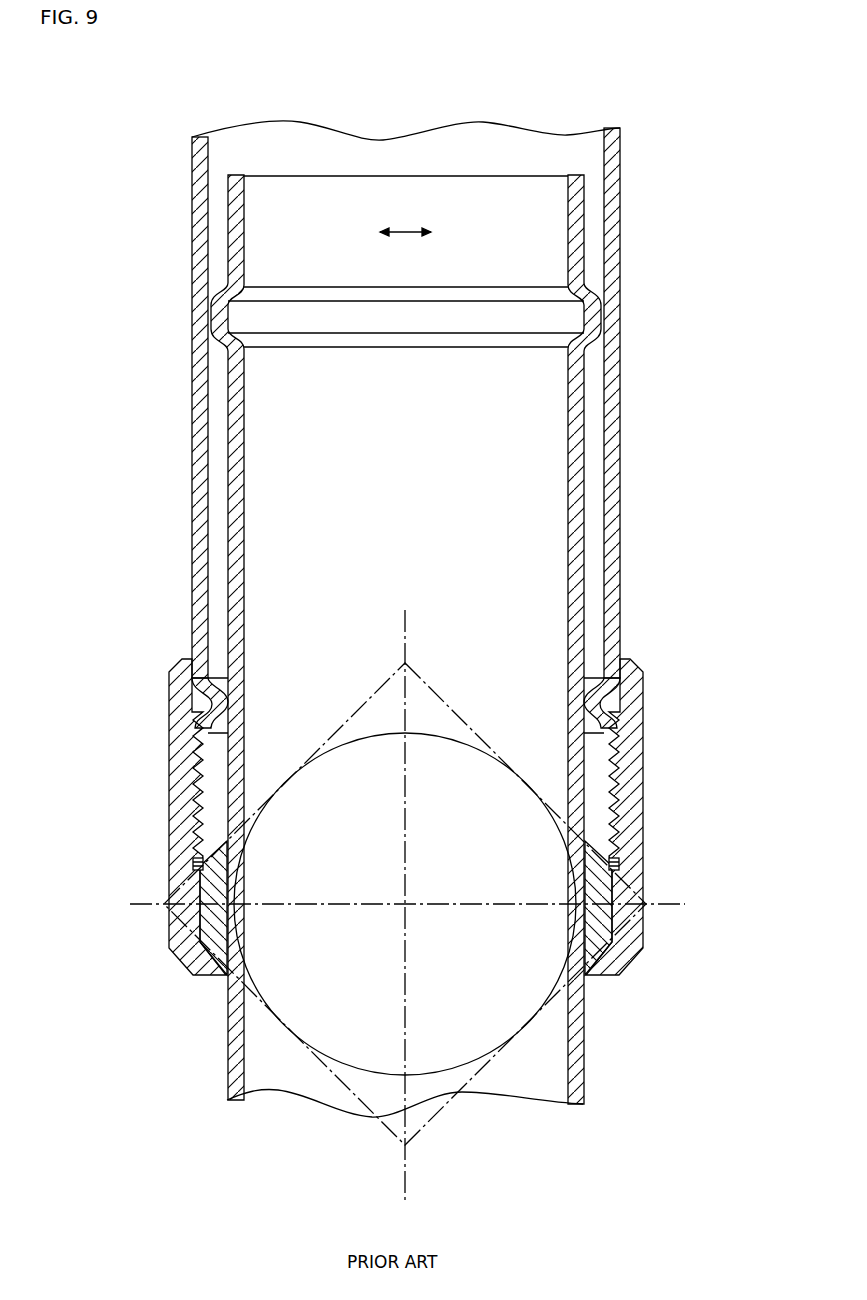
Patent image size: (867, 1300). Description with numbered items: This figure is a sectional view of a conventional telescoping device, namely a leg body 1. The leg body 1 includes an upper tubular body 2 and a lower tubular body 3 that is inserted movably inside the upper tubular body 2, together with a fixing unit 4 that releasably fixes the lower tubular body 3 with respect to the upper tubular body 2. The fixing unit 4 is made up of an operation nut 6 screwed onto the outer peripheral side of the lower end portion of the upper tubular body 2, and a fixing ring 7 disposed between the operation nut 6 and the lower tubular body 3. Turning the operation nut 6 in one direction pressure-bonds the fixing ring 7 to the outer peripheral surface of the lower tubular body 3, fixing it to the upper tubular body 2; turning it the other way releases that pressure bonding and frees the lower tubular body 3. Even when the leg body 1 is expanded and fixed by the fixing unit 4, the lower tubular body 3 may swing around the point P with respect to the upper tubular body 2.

The leg body 1 is at (660, 80).
The upper tubular body 2 is at (630, 176).
The lower tubular body 3 is at (595, 1053).
The fixing unit 4 is at (677, 755).
The operation nut 6 is at (635, 816).
The fixing ring 7 is at (612, 866).
The point P is at (405, 903).